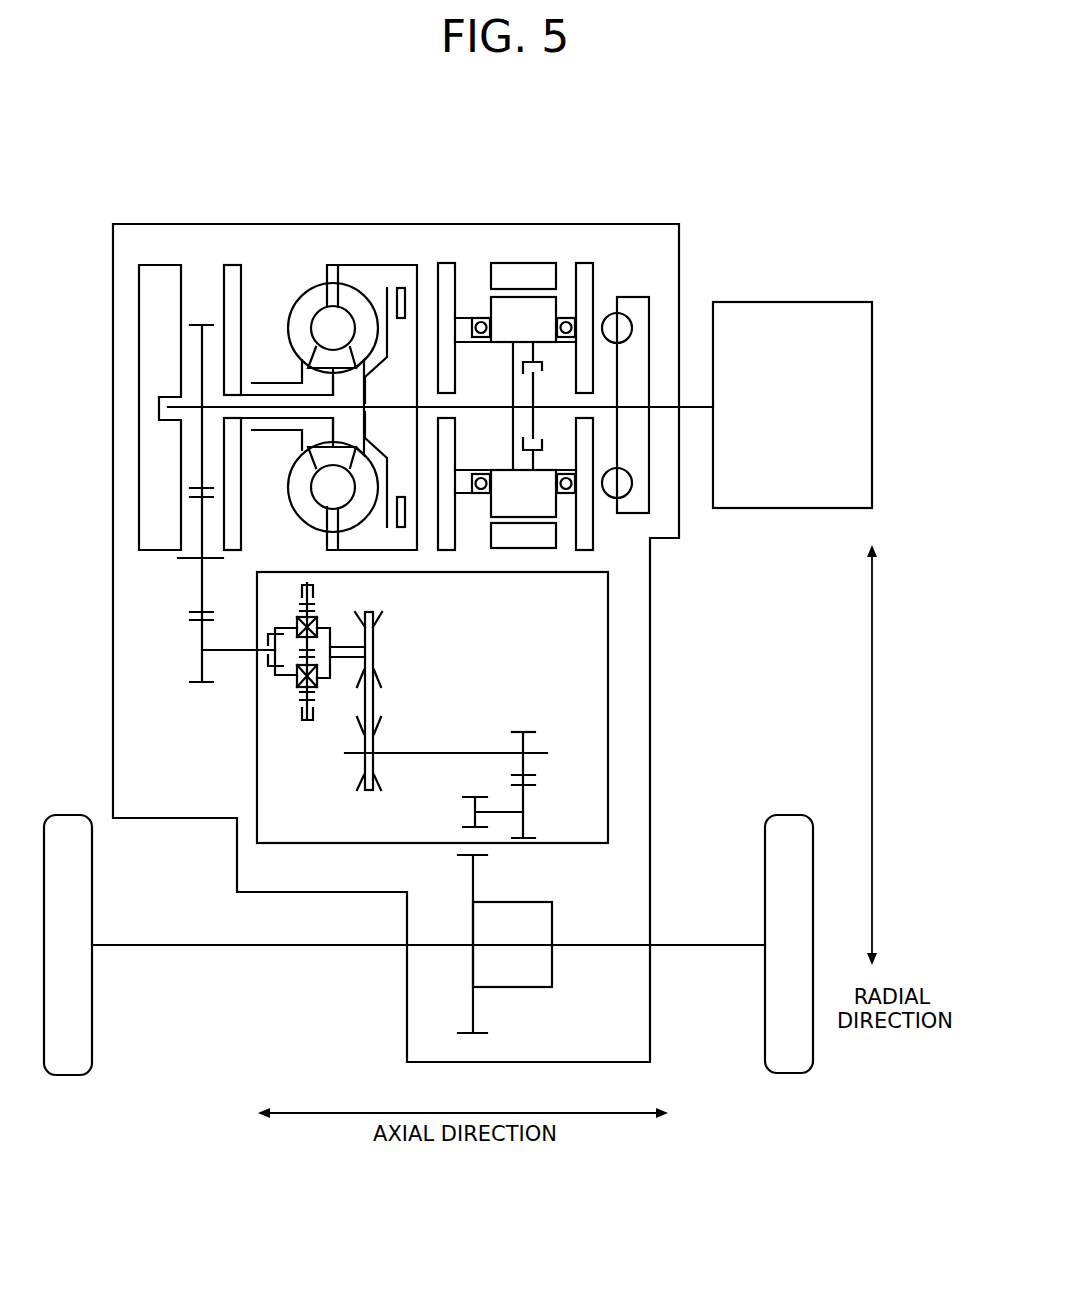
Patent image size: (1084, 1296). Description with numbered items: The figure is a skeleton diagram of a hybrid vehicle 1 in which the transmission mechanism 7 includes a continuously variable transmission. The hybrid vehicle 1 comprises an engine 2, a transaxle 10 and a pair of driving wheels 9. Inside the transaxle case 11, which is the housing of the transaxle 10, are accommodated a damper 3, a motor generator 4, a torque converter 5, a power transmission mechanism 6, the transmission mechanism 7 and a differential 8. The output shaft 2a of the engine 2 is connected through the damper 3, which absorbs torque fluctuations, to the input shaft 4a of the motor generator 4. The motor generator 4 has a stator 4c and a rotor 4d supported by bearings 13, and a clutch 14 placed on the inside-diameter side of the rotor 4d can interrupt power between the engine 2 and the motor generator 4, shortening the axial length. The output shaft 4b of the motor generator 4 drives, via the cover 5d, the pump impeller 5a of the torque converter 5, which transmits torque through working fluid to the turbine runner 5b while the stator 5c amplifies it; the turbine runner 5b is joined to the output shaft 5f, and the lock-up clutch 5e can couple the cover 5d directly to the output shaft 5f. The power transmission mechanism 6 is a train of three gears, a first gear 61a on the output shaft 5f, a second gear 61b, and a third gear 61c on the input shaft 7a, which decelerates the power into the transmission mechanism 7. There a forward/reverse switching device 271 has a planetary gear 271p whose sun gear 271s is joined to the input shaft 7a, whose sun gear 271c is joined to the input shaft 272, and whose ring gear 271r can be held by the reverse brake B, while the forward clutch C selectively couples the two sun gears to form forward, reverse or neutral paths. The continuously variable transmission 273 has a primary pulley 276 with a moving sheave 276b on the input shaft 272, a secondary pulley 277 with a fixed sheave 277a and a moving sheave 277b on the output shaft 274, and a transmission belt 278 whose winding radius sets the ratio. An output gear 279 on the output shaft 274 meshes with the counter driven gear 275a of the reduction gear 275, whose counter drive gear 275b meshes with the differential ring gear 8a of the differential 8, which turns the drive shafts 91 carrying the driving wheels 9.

The hybrid vehicle 1 is at (694, 133).
The transaxle 10 is at (601, 182).
The transaxle case 11 is at (680, 250).
The engine 2 is at (800, 302).
The output shaft 2a is at (665, 405).
The damper 3 is at (630, 297).
The motor generator 4 is at (530, 242).
The input shaft 4a is at (562, 406).
The output shaft 4b is at (486, 406).
The stator 4c is at (505, 263).
The rotor 4d is at (490, 517).
The bearings 13 is at (553, 470).
The clutch 14 is at (523, 445).
The torque converter 5 is at (318, 267).
The pump impeller 5a is at (303, 291).
The turbine runner 5b is at (361, 299).
The stator 5c is at (321, 361).
The cover 5d is at (340, 265).
The lock-up clutch 5e is at (402, 284).
The output shaft 5f is at (272, 403).
The power transmission mechanism 6 is at (202, 261).
The first gear 61a is at (203, 324).
The second gear 61b is at (191, 612).
The third gear 61c is at (192, 628).
The input shaft 7a is at (237, 652).
The transmission mechanism 7 is at (608, 753).
The forward/reverse switching device 271 is at (300, 578).
The sun gear 271c is at (296, 620).
The sun gear 271s is at (312, 640).
The planetary gear 271p is at (288, 695).
The ring gear 271r is at (298, 703).
The input shaft 272 is at (350, 658).
The continuously variable transmission 273 is at (403, 674).
The output shaft 274 is at (460, 753).
The reduction gear 275 is at (543, 736).
The counter driven gear 275a is at (532, 782).
The counter drive gear 275b is at (464, 826).
The primary pulley 276 is at (402, 620).
The moving sheave 276b is at (380, 610).
The secondary pulley 277 is at (360, 801).
The fixed sheave 277a is at (380, 790).
The moving sheave 277b is at (355, 792).
The transmission belt 278 is at (376, 708).
The output gear 279 is at (512, 732).
The reverse brake B is at (300, 592).
The forward clutch C is at (267, 643).
The differential 8 is at (553, 920).
The differential ring gear 8a is at (468, 860).
The driving wheels 9 is at (85, 815).
The drive shafts 91 is at (220, 947).